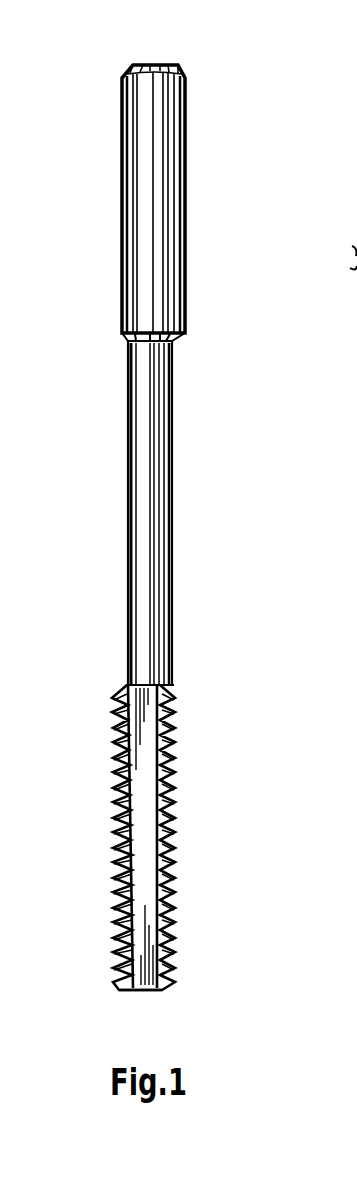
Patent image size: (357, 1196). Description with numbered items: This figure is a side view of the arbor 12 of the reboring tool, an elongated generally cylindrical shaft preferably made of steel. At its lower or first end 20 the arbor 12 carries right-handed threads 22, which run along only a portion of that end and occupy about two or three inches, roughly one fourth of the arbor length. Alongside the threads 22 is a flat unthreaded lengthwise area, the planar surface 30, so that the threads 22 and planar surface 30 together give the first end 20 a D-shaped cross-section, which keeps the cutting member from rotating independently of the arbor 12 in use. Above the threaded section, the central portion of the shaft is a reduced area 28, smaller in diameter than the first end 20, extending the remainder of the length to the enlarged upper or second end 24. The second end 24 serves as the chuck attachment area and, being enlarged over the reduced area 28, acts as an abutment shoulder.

The arbor 12 is at (158, 524).
The first end 20 is at (175, 983).
The threads 22 is at (112, 886).
The second end 24 is at (186, 90).
The reduced area 28 is at (178, 410).
The planar surface 30 is at (138, 812).